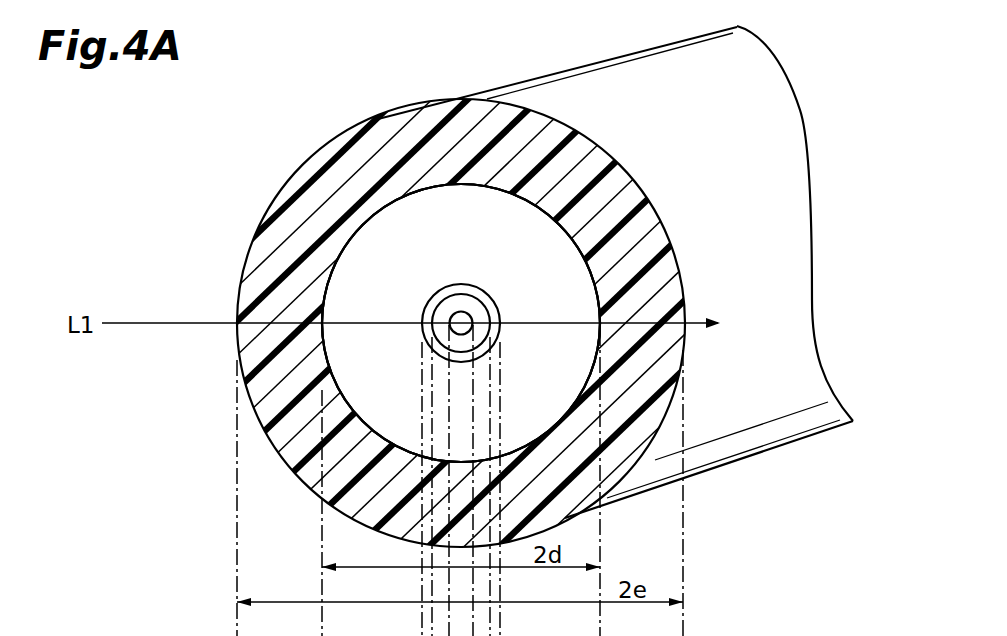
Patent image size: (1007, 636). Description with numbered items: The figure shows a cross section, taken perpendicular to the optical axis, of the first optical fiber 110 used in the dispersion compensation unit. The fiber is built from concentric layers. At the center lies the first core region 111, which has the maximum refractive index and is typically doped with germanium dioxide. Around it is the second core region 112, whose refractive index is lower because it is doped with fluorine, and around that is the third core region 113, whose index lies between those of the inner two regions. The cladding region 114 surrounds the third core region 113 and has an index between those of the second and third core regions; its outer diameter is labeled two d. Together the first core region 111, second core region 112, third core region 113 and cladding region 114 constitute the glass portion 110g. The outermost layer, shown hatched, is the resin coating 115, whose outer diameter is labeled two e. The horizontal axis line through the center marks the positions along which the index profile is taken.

The first optical fiber 110 is at (306, 138).
The glass portion 110g is at (144, 159).
The first core region 111 is at (461, 320).
The second core region 112 is at (443, 310).
The third core region 113 is at (430, 308).
The cladding region 114 is at (337, 307).
The resin coating 115 is at (237, 388).